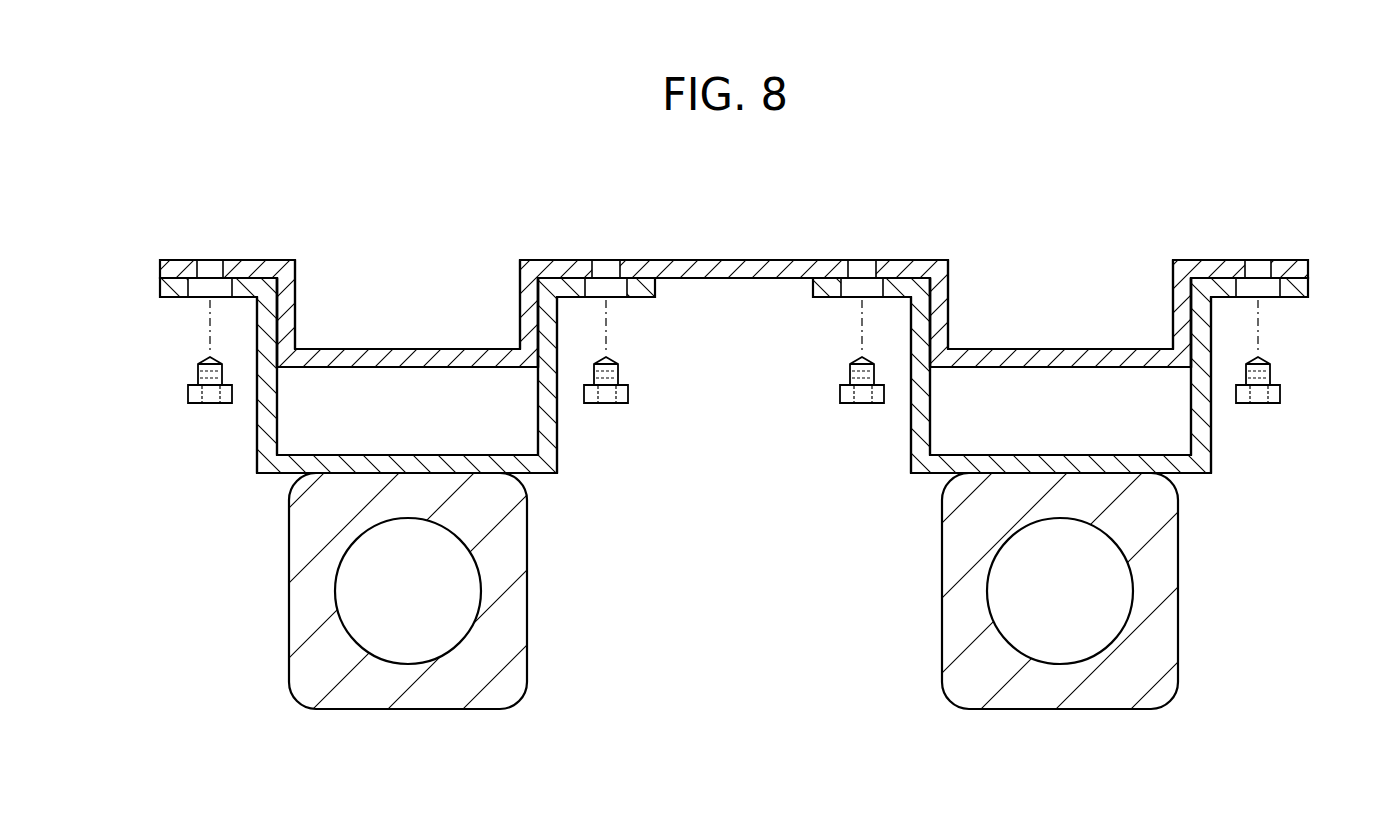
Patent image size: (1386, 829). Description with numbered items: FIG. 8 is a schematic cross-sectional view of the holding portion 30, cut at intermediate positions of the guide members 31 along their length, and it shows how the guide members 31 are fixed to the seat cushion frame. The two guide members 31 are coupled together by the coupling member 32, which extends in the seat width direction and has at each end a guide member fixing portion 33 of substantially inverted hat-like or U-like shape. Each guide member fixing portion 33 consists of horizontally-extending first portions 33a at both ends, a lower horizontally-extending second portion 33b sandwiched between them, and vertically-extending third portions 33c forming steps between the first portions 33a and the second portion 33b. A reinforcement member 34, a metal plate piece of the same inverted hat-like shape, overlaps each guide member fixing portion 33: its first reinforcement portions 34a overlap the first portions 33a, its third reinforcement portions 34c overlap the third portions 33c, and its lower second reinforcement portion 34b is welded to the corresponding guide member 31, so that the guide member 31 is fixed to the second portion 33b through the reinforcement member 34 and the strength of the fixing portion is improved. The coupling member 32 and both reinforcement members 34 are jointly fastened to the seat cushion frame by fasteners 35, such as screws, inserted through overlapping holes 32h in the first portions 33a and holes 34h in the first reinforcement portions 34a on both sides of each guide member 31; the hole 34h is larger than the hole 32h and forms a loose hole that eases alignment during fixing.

The holding portion 30 is at (1290, 244).
The guide member 31 is at (507, 625).
The coupling member 32 is at (730, 234).
The hole 32h is at (216, 272).
The guide member fixing portion 33 is at (400, 338).
The first portion 33a is at (177, 267).
The second portion 33b is at (428, 358).
The third portion 33c is at (290, 303).
The reinforcement member 34 is at (567, 463).
The first reinforcement portion 34a is at (173, 287).
The second reinforcement portion 34b is at (333, 467).
The third reinforcement portion 34c is at (262, 420).
The hole 34h is at (197, 292).
The fastener 35 is at (188, 397).